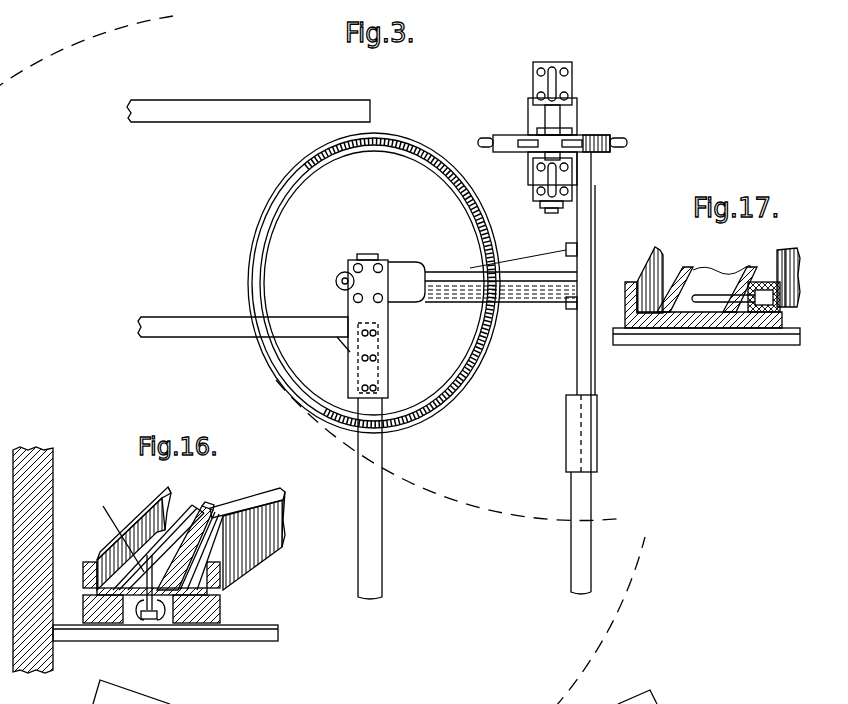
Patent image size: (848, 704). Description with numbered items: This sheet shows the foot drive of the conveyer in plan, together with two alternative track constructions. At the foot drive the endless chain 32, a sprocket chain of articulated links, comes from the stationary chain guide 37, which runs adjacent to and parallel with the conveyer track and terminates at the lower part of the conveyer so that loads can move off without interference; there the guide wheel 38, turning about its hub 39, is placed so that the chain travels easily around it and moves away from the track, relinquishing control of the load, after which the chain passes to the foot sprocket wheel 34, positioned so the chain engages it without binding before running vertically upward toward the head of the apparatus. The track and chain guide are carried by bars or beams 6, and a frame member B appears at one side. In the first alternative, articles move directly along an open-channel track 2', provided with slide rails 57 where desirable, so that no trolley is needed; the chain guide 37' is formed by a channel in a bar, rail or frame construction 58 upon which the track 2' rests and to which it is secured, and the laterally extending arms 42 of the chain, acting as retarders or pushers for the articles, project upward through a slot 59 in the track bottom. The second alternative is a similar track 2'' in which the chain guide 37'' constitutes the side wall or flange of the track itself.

In FIG. 3, the foot sprocket wheel 34 is at (603, 136).
In FIG. 3, the guide wheel 38 is at (374, 283).
In FIG. 3, the hub of worm wheel 39 is at (338, 283).
In FIG. 3, the chain guide 37 is at (322, 360).
In FIG. 16, the frame bar B is at (30, 446).
In FIG. 16, the bars or beams 6 is at (162, 635).
In FIG. 17, the bars or beams 6 is at (744, 345).
In FIG. 16, the bar, rail or frame construction 58 is at (90, 612).
In FIG. 16, the chain guide 37' is at (134, 613).
In FIG. 16, the endless chain 32 is at (174, 624).
In FIG. 17, the endless chain 32 is at (770, 290).
In FIG. 16, the track 2' is at (134, 528).
In FIG. 16, the slot 59 is at (210, 503).
In FIG. 16, the slide rails 57 is at (95, 556).
In FIG. 17, the slide rails 57 is at (688, 268).
In FIG. 16, the laterally extending arms 42 is at (114, 528).
In FIG. 17, the laterally extending arms 42 is at (710, 302).
In FIG. 17, the track 2'' is at (694, 284).
In FIG. 17, the chain guide 37'' is at (791, 265).